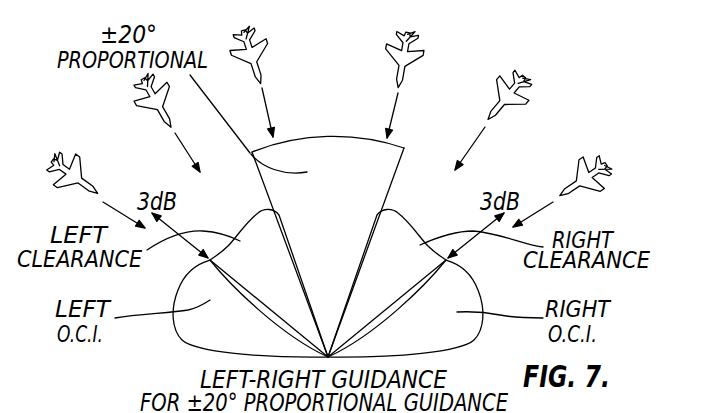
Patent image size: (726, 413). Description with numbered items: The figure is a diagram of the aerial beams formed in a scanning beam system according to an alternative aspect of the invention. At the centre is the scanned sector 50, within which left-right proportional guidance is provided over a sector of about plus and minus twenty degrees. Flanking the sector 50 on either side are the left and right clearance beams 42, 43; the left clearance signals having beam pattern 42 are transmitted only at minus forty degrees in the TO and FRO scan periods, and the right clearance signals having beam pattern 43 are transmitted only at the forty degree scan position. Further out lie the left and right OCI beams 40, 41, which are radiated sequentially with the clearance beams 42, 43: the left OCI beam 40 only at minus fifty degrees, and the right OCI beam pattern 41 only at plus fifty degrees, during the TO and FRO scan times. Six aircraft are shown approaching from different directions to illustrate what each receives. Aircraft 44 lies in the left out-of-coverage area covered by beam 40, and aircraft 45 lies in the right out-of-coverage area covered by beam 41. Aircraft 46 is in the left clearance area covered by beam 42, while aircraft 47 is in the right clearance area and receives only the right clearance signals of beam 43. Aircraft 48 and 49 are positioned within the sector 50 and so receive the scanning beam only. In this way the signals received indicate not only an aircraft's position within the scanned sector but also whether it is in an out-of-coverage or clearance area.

The left OCI beam 40 is at (185, 275).
The right OCI beam pattern 41 is at (477, 297).
The left clearance beam pattern 42 is at (243, 222).
The right clearance beam pattern 43 is at (412, 219).
The aircraft 44 is at (88, 172).
The aircraft 45 is at (605, 163).
The aircraft 46 is at (132, 107).
The aircraft 47 is at (530, 93).
The aircraft 48 is at (281, 57).
The aircraft 49 is at (393, 75).
The sector 50 is at (315, 136).